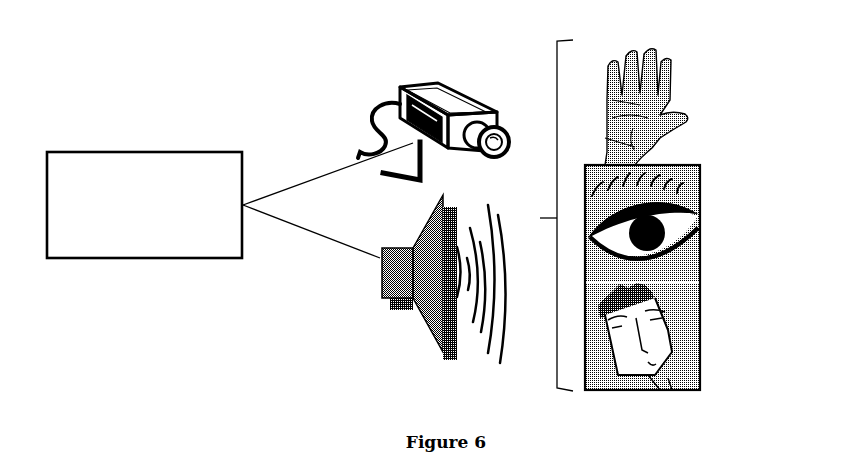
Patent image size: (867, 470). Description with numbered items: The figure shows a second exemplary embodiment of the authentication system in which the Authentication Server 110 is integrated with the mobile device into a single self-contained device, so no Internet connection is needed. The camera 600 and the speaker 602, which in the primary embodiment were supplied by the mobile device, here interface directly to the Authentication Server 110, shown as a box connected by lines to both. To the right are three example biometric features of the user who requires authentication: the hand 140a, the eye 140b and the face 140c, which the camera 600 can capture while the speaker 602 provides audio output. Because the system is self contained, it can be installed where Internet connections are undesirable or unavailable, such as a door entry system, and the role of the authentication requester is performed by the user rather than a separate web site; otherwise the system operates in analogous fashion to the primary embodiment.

The Authentication Server 110 is at (130, 151).
The camera 600 is at (422, 86).
The speaker 602 is at (427, 330).
The hand 140a is at (697, 108).
The eye 140b is at (700, 238).
The face 140c is at (700, 330).